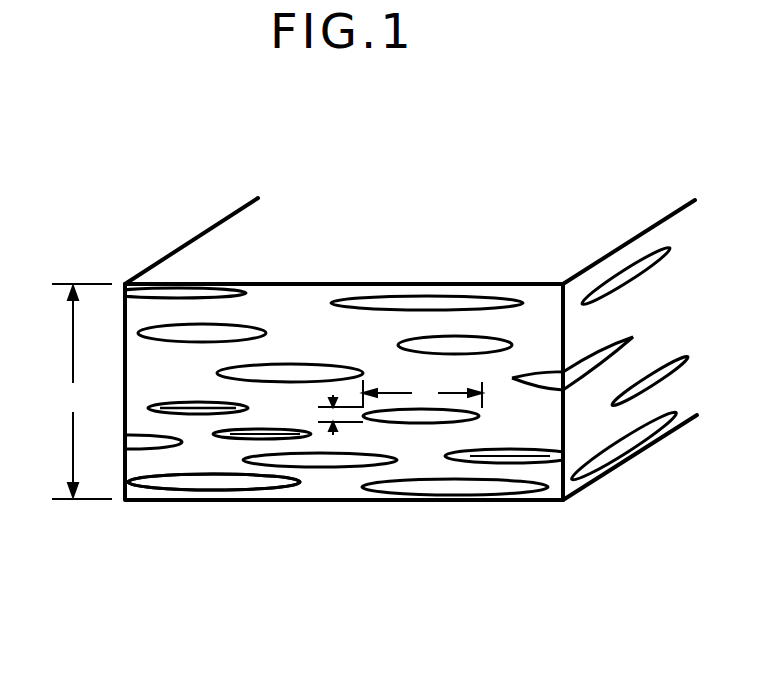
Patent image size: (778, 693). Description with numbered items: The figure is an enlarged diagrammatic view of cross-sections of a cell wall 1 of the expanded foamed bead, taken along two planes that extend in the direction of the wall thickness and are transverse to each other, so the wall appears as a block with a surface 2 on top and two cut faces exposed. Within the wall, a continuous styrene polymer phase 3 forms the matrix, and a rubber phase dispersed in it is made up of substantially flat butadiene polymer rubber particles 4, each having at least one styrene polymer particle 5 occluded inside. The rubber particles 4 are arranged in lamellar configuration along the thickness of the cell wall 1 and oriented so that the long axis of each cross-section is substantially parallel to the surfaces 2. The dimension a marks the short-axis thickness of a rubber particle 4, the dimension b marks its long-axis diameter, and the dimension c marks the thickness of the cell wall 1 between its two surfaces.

The cell wall 1 is at (183, 233).
The surface of cell wall 2 is at (348, 260).
The continuous styrene polymer phase 3 is at (540, 335).
The rubber particle 4 is at (252, 490).
The styrene polymer particle 5 is at (205, 483).
The short axis length a is at (330, 415).
The long axis length b is at (422, 393).
The thickness of cell wall c is at (82, 391).